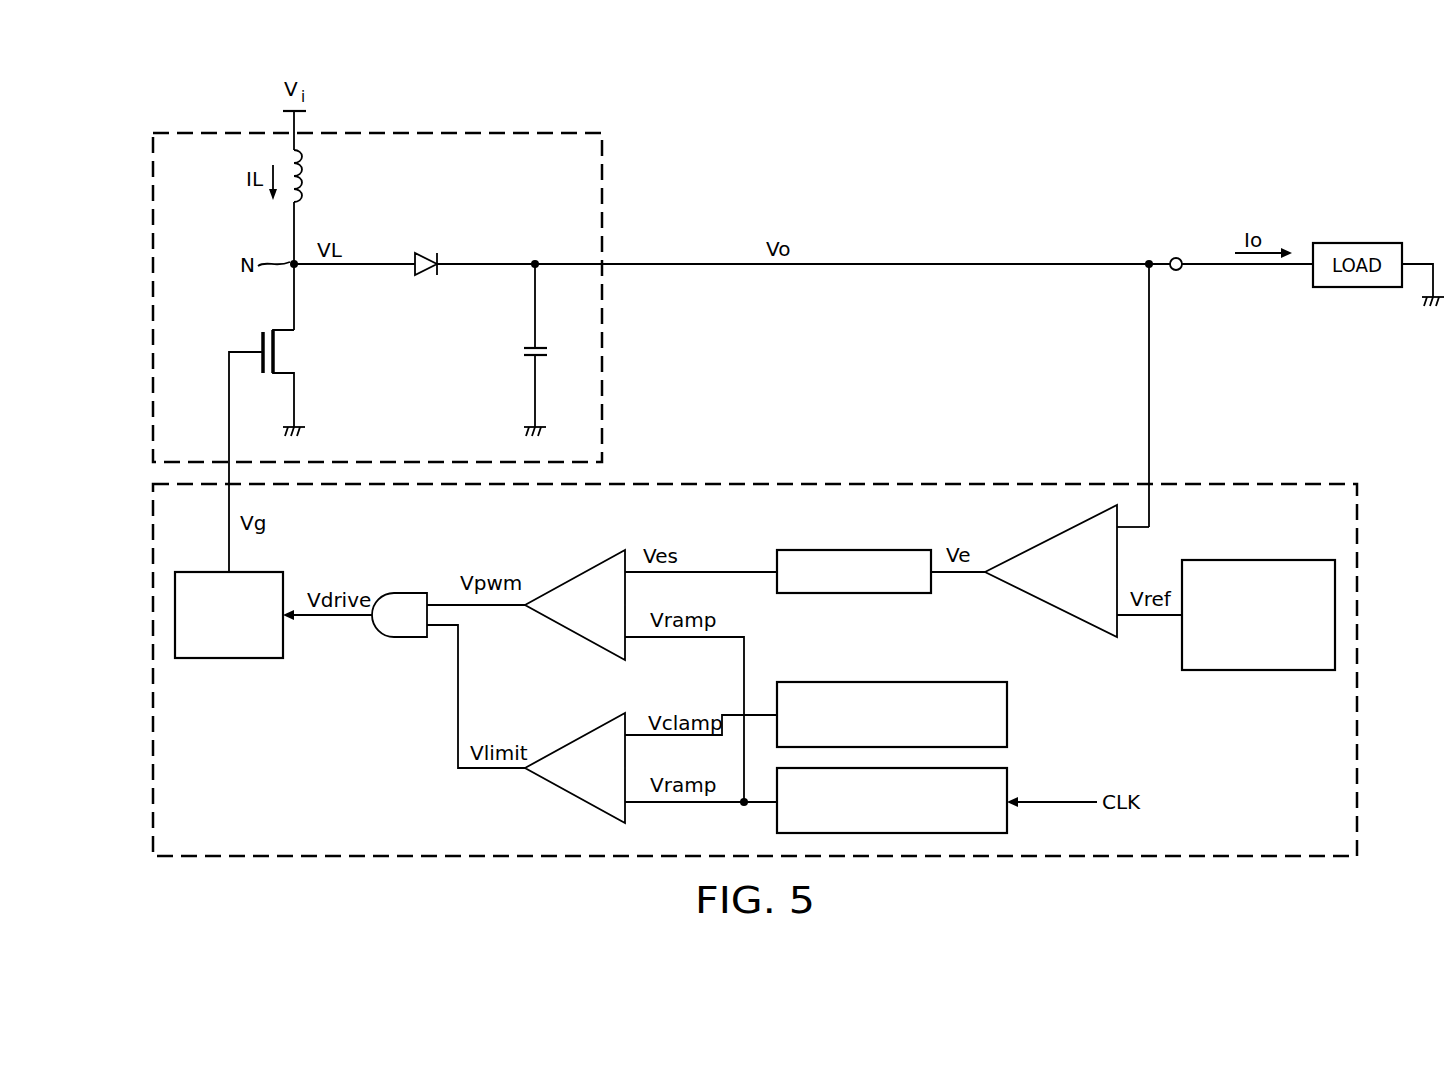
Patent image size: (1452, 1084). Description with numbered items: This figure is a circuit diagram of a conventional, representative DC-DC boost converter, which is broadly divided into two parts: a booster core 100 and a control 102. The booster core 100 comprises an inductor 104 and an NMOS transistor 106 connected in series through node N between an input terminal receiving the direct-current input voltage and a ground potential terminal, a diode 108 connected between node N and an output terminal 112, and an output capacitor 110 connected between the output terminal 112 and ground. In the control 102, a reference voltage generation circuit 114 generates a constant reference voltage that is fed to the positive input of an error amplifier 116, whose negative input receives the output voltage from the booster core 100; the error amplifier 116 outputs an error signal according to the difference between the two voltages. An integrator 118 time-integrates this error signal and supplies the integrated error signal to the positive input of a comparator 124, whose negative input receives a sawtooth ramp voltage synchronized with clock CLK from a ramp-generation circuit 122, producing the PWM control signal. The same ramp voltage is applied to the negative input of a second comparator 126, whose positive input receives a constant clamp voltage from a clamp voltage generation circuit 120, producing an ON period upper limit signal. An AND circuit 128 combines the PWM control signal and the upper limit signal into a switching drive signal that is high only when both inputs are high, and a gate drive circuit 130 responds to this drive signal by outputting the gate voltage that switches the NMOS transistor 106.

The booster core 100 is at (612, 184).
The control 102 is at (967, 474).
The inductor 104 is at (303, 178).
The NMOS transistor 106 is at (258, 335).
The diode 108 is at (427, 253).
The output capacitor 110 is at (523, 352).
The output terminal 112 is at (1178, 257).
The reference voltage generation circuit 114 is at (1268, 672).
The error amplifier 116 is at (1050, 604).
The integrator 118 is at (855, 596).
The clamp voltage generation circuit 120 is at (1008, 728).
The ramp-generation circuit 122 is at (1008, 815).
The comparator 124 is at (575, 632).
The comparator 126 is at (575, 797).
The AND circuit 128 is at (405, 640).
The gate drive circuit 130 is at (208, 660).